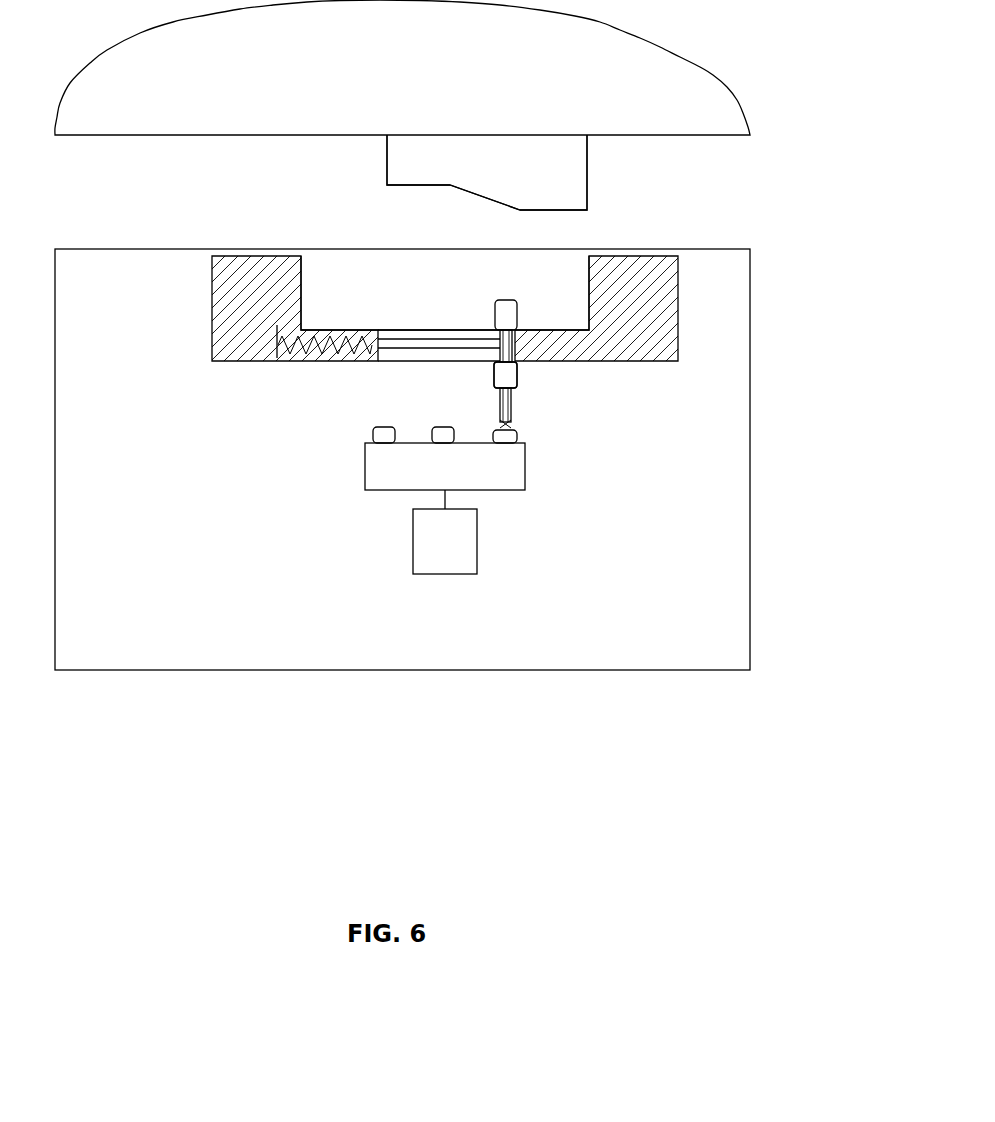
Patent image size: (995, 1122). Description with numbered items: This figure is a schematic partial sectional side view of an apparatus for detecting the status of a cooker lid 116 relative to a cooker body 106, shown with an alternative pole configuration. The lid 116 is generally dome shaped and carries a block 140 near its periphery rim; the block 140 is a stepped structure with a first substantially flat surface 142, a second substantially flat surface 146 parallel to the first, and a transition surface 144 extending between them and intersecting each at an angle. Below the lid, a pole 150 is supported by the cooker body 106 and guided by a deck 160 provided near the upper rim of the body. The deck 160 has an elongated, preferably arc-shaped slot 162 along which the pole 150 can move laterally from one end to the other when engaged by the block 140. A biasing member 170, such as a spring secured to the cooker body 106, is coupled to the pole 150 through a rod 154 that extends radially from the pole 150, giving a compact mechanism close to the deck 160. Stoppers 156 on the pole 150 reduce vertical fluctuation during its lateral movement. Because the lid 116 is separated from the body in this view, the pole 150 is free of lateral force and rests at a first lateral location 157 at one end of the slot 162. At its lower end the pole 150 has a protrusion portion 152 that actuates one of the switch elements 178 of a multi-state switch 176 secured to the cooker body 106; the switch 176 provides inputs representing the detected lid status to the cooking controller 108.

The cooker body 106 is at (752, 326).
The cooking controller 108 is at (478, 553).
The cooker lid 116 is at (700, 65).
The block 140 is at (532, 152).
The first surface 142 is at (408, 183).
The transition surface 144 is at (487, 195).
The second surface 146 is at (557, 208).
The pole 150 is at (513, 405).
The protrusion portion 152 is at (520, 432).
The rod 154 is at (389, 328).
The stopper 156 is at (497, 310).
The first lateral location 157 is at (492, 373).
The deck 160 is at (535, 325).
The slot 162 is at (427, 327).
The biasing member 170 is at (328, 347).
The multi-state switch 176 is at (398, 477).
The switch elements 178 is at (370, 437).